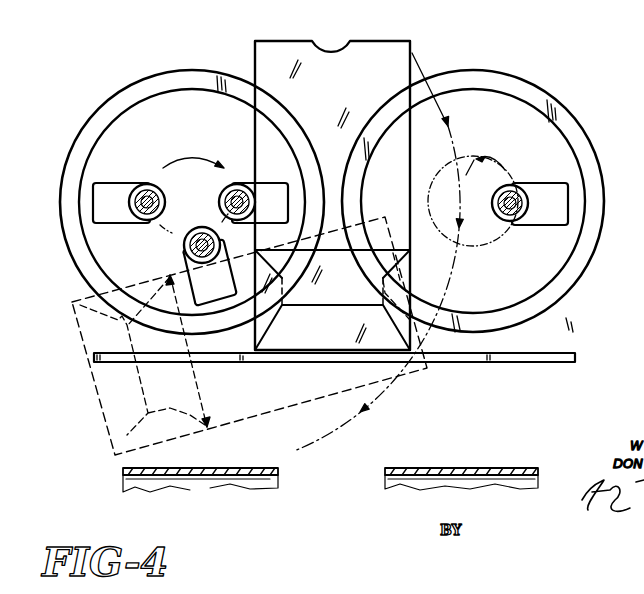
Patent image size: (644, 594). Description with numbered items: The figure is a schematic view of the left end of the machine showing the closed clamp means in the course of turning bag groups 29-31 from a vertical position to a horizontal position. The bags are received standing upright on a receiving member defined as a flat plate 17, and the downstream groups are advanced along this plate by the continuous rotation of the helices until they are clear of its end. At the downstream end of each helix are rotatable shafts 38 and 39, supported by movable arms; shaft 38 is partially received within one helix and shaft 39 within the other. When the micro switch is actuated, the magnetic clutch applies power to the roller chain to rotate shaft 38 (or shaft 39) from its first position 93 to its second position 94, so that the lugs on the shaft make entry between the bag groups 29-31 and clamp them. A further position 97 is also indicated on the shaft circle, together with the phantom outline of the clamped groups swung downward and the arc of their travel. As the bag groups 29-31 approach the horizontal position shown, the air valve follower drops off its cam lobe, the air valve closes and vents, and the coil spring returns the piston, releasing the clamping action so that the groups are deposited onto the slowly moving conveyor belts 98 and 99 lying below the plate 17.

The bag groups 29-31 is at (388, 40).
The first position 93 is at (102, 180).
The rotatable shaft 38 is at (155, 181).
The second position 94 is at (240, 172).
The pin 97 is at (203, 279).
The rotatable shaft 39 is at (495, 180).
The flat plate 17 is at (483, 361).
The conveyor belt 98 is at (278, 473).
The conveyor belt 99 is at (513, 470).